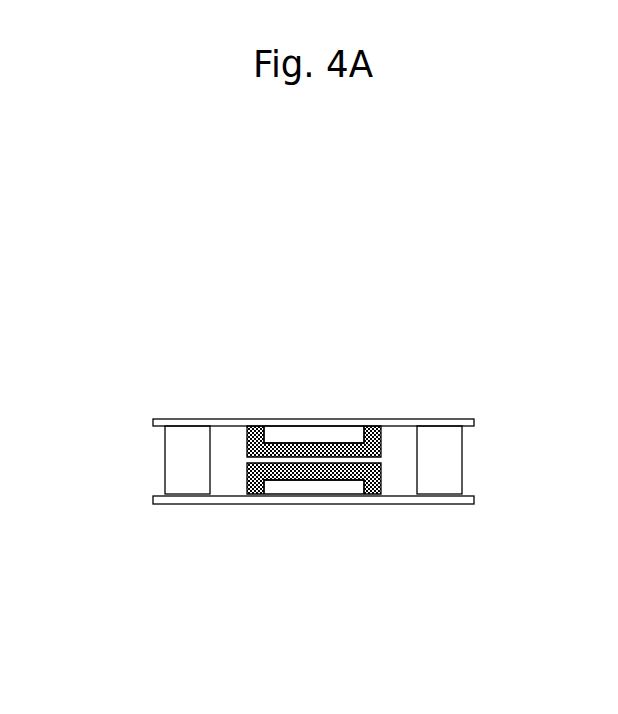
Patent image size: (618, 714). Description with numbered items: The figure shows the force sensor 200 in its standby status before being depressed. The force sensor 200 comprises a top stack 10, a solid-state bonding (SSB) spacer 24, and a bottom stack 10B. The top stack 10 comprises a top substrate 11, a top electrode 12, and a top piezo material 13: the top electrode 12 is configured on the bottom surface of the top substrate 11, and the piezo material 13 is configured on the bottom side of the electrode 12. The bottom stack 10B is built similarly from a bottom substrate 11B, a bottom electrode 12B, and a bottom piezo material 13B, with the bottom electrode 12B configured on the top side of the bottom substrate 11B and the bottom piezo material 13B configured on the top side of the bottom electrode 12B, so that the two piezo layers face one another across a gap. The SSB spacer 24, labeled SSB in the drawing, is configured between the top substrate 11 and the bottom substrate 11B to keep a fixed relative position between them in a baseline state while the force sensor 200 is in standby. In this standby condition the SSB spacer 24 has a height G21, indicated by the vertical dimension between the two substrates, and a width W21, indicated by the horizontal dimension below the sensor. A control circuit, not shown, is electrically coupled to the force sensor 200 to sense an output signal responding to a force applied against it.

The force sensor 200 is at (352, 254).
The top stack 10 is at (397, 333).
The top substrate 11 is at (283, 419).
The top electrode 12 is at (298, 436).
The top piezo material 13 is at (325, 455).
The bottom stack 10B is at (426, 523).
The bottom substrate 11B is at (297, 504).
The bottom electrode 12B is at (315, 486).
The bottom piezo material 13B is at (340, 470).
The solid-state bonding (SSB) spacer 24 is at (196, 471).
The solid-state bonding SSB is at (172, 463).
The height G21 is at (617, 496).
The width W21 is at (270, 565).